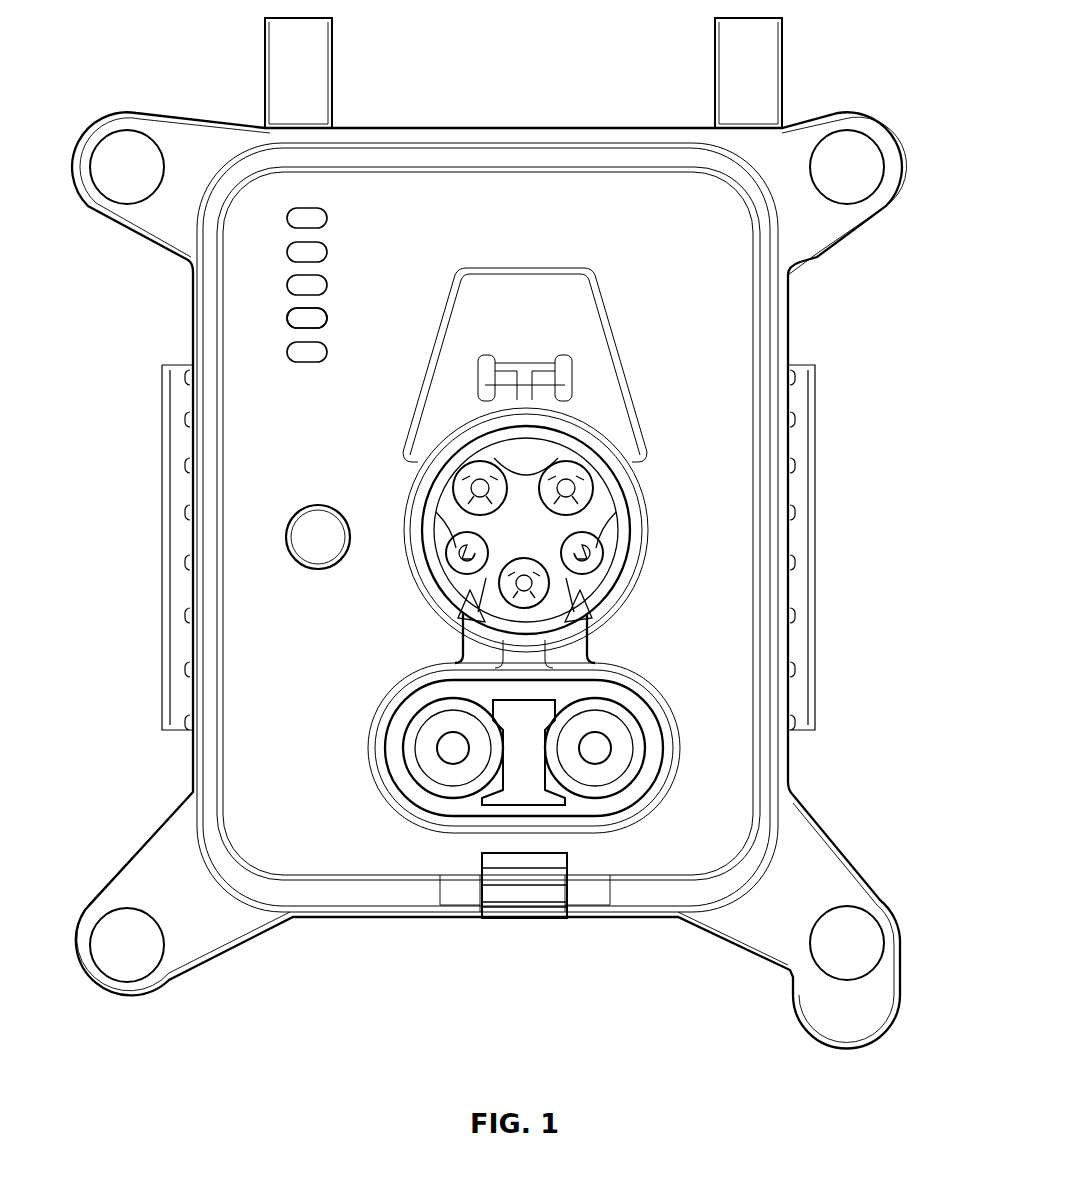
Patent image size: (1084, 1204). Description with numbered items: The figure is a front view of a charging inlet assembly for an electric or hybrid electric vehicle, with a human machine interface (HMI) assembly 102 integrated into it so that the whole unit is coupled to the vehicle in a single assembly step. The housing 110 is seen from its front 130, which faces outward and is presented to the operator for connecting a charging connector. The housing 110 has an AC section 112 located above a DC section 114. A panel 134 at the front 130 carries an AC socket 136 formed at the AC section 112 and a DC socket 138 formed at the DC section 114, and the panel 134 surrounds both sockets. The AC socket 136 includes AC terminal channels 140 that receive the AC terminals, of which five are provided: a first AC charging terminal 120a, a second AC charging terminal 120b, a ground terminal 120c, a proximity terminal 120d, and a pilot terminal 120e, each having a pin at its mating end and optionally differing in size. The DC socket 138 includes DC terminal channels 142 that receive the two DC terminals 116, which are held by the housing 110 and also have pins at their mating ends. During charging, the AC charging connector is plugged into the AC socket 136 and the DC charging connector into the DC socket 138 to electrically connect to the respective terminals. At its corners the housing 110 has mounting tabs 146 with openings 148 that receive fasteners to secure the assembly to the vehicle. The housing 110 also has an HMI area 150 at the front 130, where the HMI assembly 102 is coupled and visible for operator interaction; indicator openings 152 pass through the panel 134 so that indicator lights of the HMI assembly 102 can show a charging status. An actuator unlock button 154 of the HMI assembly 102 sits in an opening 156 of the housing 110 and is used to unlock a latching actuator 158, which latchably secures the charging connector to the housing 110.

The human machine interface (HMI) assembly 102 is at (270, 290).
The housing 110 is at (484, 537).
The AC section 112 is at (640, 493).
The DC section 114 is at (672, 735).
The DC terminals 116 is at (453, 748).
The first AC charging terminal 120a is at (478, 490).
The second AC charging terminal 120b is at (566, 488).
The ground terminal 120c is at (524, 583).
The proximity terminal 120d is at (582, 553).
The pilot terminal 120e is at (467, 553).
The front 130 is at (325, 825).
The panel 134 is at (415, 225).
The AC socket 136 is at (603, 443).
The DC socket 138 is at (662, 790).
The AC terminal channels 140 is at (603, 443).
The DC terminal channels 142 is at (425, 800).
The mounting tabs 146 is at (175, 932).
The openings 148 is at (120, 957).
The HMI area 150 is at (332, 195).
The indicator openings 152 is at (278, 320).
The actuator unlock button 154 is at (318, 537).
The opening 156 is at (292, 563).
The latching actuator 158 is at (530, 360).